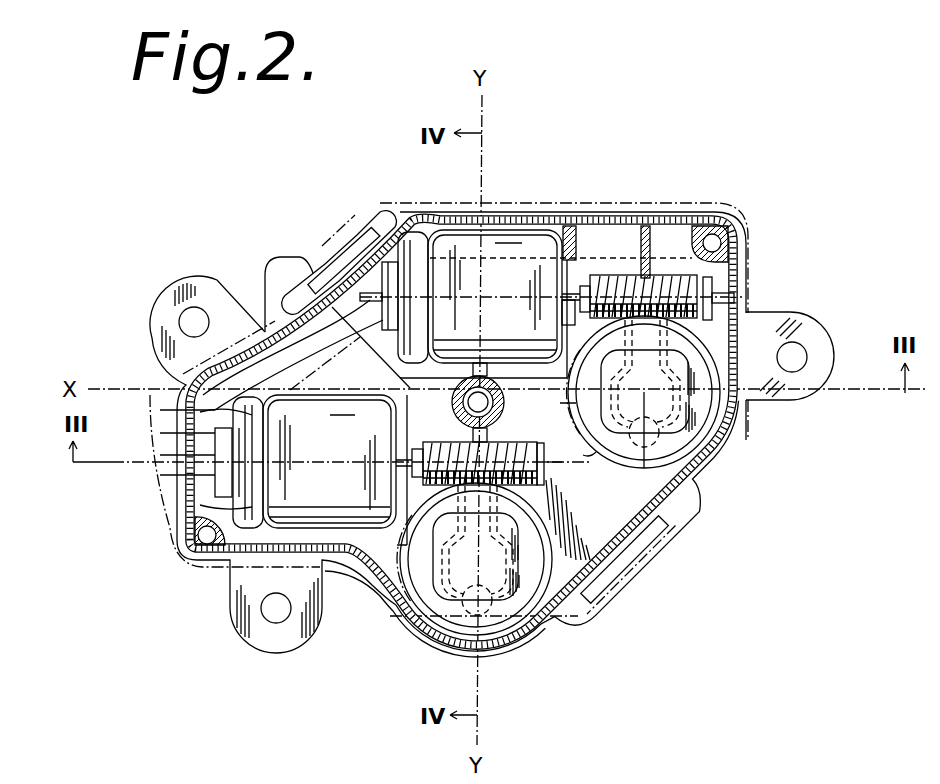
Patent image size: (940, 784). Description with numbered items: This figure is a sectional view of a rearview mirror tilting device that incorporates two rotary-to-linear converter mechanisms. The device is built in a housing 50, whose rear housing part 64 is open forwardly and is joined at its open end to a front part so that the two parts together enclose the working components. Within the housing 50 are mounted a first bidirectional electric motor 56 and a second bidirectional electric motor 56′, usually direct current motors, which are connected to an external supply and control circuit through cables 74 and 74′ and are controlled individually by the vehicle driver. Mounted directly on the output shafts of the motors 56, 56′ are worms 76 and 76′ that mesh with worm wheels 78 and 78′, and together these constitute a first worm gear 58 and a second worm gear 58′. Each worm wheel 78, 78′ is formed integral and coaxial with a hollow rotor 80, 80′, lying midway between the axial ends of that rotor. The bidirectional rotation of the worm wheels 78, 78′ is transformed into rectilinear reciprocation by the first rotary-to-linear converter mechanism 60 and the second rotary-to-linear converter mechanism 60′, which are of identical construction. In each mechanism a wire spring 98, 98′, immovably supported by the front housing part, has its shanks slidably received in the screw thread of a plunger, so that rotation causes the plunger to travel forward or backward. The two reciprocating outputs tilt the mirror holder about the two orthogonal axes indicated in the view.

The housing 50 is at (418, 213).
The first bidirectional electric motor 56 is at (268, 500).
The second bidirectional electric motor 56′ is at (535, 243).
The first worm gear 58 is at (497, 438).
The second worm gear 58′ is at (618, 275).
The first rotary-to-linear converter mechanism 60 is at (568, 575).
The second rotary-to-linear converter mechanism 60′ is at (594, 468).
The rear housing part 64 is at (635, 220).
The cable 74 is at (188, 475).
The cable 74′ is at (163, 432).
The worm 76 is at (466, 441).
The worm 76′ is at (660, 288).
The worm wheel 78 is at (424, 590).
The worm wheel 78′ is at (700, 403).
The hollow rotor 80 is at (556, 620).
The hollow rotor 80′ is at (702, 362).
The wire spring 98 is at (445, 592).
The wire spring 98′ is at (690, 472).